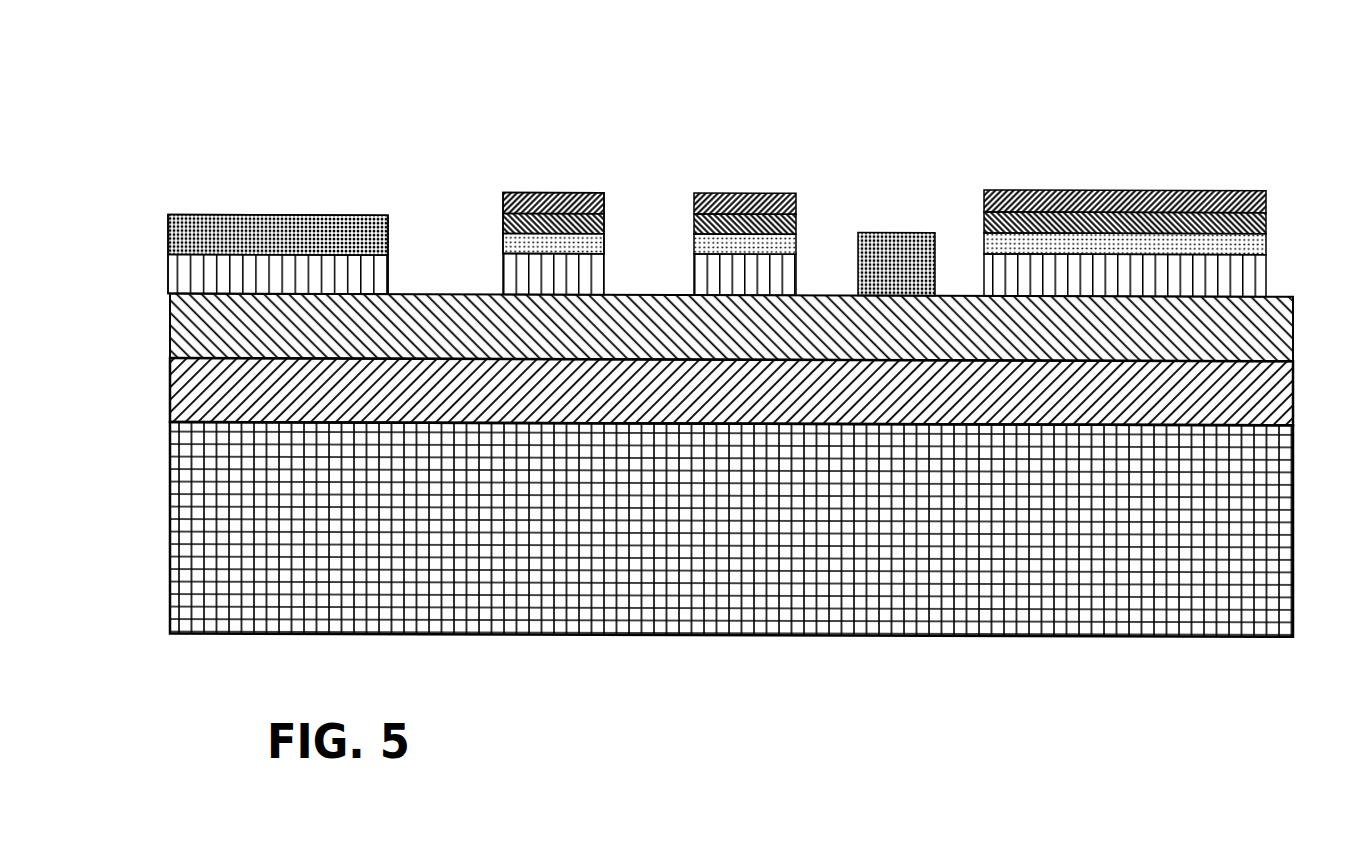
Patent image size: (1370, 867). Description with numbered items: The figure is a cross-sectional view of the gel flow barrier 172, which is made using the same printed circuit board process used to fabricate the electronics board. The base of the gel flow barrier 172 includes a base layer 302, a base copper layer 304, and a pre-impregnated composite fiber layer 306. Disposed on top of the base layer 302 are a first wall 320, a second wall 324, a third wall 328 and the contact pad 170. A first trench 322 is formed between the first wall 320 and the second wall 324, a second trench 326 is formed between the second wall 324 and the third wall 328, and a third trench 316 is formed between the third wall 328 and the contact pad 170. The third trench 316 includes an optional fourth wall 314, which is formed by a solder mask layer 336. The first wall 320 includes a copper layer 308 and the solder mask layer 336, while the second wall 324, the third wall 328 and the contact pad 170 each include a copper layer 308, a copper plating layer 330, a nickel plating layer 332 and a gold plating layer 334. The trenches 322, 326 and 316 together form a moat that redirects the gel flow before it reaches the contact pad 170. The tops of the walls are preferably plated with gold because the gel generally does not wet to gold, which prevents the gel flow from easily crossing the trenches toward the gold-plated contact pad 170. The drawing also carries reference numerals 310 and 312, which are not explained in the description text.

The contact pad 170 is at (1240, 172).
The gel flow barrier 172 is at (990, 102).
The base layer 302 is at (170, 523).
The base copper layer 304 is at (170, 407).
The pre-impregnated composite fiber layer 306 is at (170, 342).
The copper layer 308 is at (168, 275).
The first gate stack 310 is at (512, 195).
The second gate stack 312 is at (793, 194).
The fourth wall 314 is at (895, 230).
The third trench 316 is at (832, 267).
The first wall 320 is at (239, 236).
The first trench 322 is at (441, 270).
The second wall 324 is at (543, 190).
The second trench 326 is at (646, 269).
The third wall 328 is at (740, 191).
The copper plating layer 330 is at (502, 237).
The nickel plating layer 332 is at (502, 214).
The gold plating layer 334 is at (502, 197).
The solder mask layer 336 is at (168, 224).